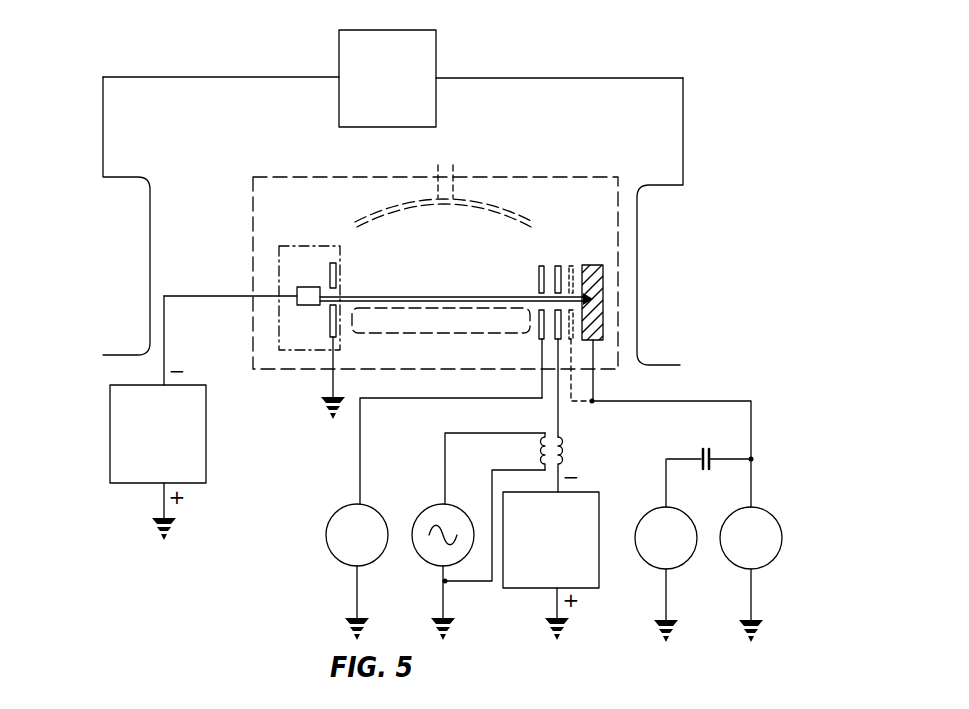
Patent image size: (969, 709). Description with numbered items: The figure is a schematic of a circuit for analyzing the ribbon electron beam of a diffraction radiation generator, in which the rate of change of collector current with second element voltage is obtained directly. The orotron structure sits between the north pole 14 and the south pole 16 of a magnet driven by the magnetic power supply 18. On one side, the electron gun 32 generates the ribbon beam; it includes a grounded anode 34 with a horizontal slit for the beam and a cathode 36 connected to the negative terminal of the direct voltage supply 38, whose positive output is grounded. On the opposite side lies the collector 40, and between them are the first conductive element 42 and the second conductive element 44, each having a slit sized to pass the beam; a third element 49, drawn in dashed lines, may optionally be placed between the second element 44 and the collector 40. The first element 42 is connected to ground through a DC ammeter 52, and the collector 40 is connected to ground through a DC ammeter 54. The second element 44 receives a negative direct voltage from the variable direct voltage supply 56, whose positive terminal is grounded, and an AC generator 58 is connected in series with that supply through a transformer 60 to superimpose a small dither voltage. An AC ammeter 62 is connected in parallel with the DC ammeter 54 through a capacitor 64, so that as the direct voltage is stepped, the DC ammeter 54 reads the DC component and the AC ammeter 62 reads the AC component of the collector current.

The north pole 14 is at (147, 178).
The south pole 16 is at (645, 185).
The magnetic power supply 18 is at (436, 58).
The electron gun 32 is at (279, 328).
The grounded anode 34 is at (336, 278).
The cathode 36 is at (312, 287).
The direct voltage supply 38 is at (206, 430).
The collector 40 is at (591, 265).
The first conductive element 42 is at (539, 282).
The second conductive element 44 is at (558, 266).
The third element 49 is at (571, 266).
The DC ammeter 52 is at (383, 508).
The DC ammeter 54 is at (772, 512).
The variable direct voltage supply 56 is at (599, 492).
The AC generator 58 is at (453, 508).
The transformer 60 is at (547, 428).
The AC ammeter 62 is at (690, 512).
The capacitor 64 is at (703, 450).